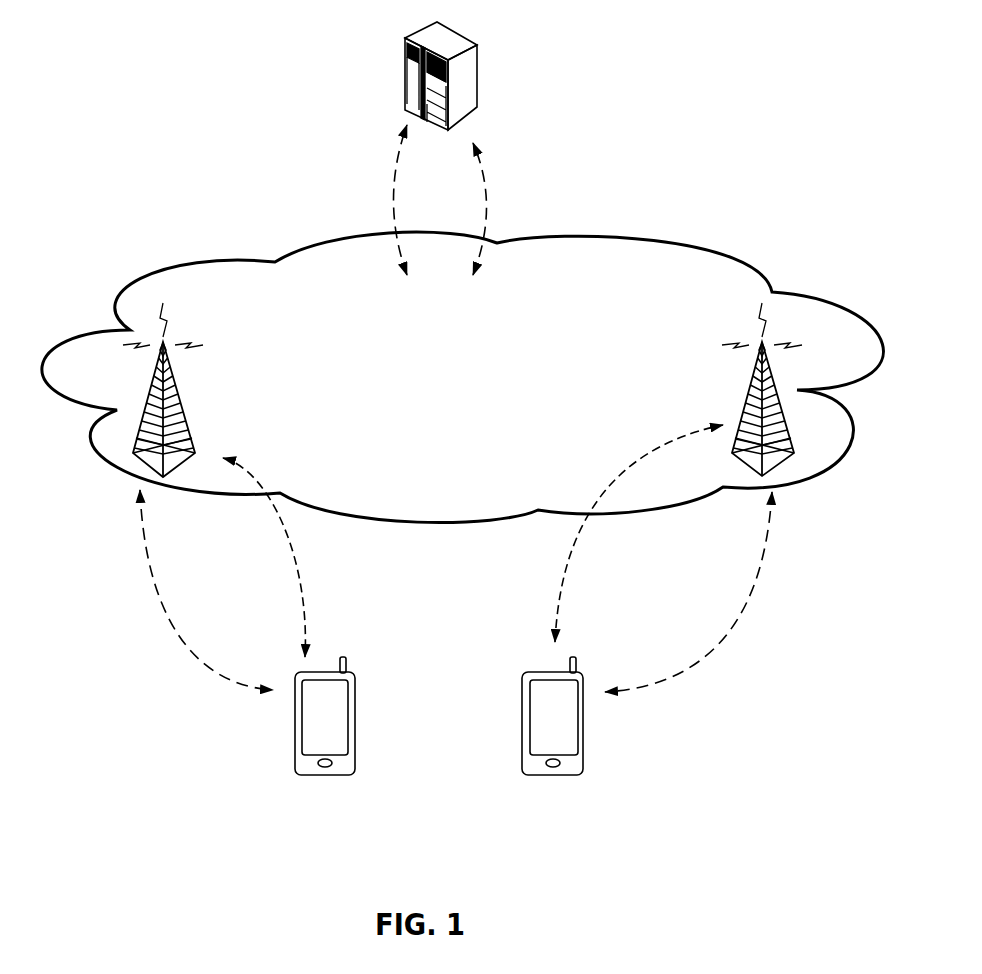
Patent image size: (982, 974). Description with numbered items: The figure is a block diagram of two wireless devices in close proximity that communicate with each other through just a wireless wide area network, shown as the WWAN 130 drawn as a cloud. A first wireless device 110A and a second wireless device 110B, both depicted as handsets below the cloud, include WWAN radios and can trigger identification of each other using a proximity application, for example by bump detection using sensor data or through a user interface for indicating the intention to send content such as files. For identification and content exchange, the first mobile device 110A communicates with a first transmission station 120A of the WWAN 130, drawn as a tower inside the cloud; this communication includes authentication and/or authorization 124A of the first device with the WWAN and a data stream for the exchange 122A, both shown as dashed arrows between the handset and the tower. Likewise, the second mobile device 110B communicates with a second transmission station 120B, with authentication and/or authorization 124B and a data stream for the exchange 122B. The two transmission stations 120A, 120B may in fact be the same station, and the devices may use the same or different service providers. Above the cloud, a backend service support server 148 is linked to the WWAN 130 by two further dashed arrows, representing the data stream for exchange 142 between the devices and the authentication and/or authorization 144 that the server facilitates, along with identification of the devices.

The first wireless device 110A is at (295, 760).
The second wireless device 110B is at (583, 757).
The first transmission station 120A is at (185, 428).
The second transmission station 120B is at (747, 400).
The data stream for the exchange 122A is at (300, 570).
The data stream for the exchange 122B is at (565, 573).
The authentication and/or authorization 124A is at (157, 592).
The authentication and/or authorization 124B is at (750, 590).
The wireless wide area network (WWAN) 130 is at (722, 253).
The data stream for exchange 142 is at (388, 192).
The authentication and/or authorization 144 is at (490, 197).
The backend service support server 148 is at (477, 93).